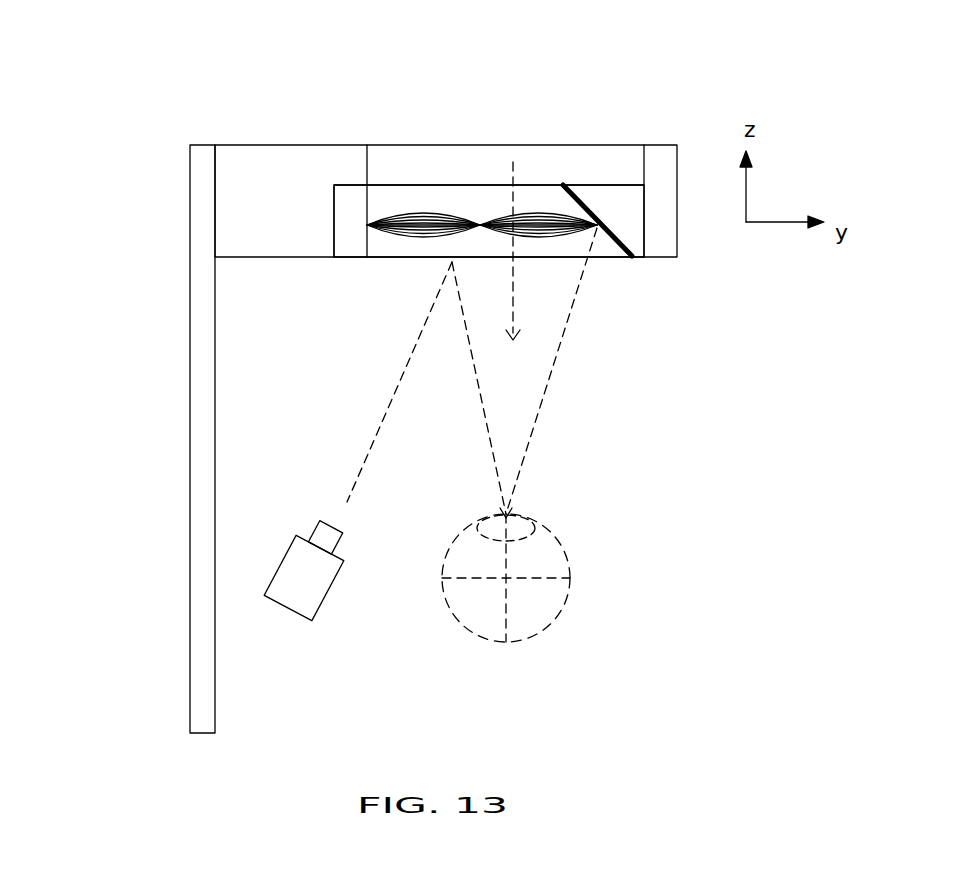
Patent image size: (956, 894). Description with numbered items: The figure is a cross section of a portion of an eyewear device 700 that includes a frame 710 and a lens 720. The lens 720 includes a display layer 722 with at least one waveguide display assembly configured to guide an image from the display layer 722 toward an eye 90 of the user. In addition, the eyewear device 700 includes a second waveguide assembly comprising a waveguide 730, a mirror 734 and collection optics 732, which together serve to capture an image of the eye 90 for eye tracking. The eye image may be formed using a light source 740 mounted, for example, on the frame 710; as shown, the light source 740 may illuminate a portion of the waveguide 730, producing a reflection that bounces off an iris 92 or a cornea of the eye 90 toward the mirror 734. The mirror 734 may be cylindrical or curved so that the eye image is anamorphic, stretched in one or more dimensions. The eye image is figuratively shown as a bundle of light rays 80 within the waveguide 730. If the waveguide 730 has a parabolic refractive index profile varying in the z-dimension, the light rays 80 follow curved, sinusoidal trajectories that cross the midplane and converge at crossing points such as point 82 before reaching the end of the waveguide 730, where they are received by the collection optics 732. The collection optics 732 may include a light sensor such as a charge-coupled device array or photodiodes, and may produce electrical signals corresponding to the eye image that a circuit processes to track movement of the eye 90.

The eyewear device 700 is at (417, 366).
The frame 710 is at (235, 145).
The lens 720 is at (511, 201).
The display layer 722 is at (557, 165).
The waveguide 730 is at (622, 207).
The collection optics 732 is at (350, 185).
The mirror 734 is at (630, 257).
The light source 740 is at (283, 608).
The light rays 80 is at (410, 236).
The crossing point 82 is at (482, 226).
The eye 90 is at (545, 637).
The iris 92 is at (534, 530).